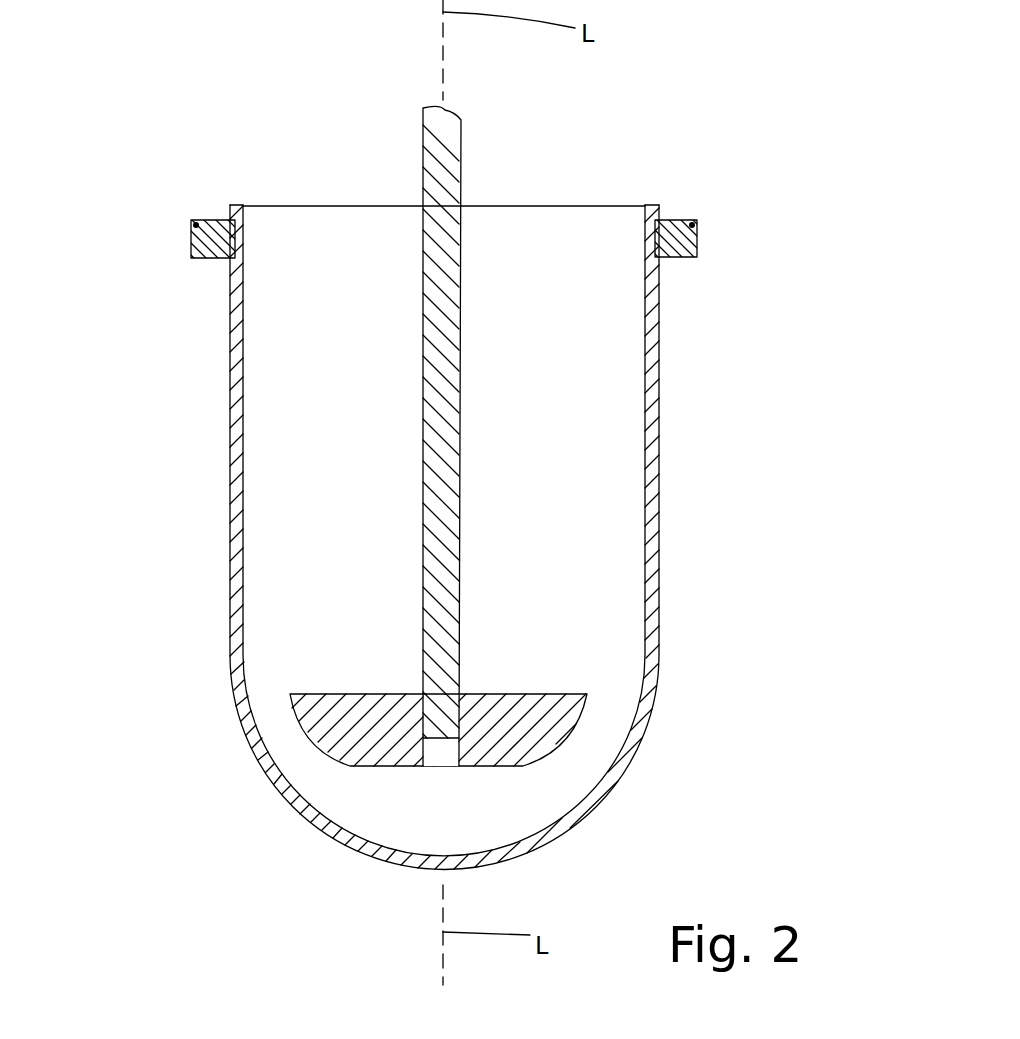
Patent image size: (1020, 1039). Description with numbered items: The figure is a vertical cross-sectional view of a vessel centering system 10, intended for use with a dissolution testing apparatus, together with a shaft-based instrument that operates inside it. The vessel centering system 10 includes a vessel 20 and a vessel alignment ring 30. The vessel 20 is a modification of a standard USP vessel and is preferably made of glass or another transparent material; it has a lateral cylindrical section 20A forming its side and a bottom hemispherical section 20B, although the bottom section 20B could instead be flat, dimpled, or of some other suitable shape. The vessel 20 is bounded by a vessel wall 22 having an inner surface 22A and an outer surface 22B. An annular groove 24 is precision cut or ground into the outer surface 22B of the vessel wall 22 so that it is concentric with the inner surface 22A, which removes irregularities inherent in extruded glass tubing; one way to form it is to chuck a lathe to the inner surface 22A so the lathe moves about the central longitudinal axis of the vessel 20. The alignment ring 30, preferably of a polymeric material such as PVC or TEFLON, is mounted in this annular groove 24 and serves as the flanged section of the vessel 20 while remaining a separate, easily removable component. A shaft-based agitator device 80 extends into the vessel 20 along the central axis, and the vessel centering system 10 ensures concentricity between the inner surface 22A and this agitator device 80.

The vessel centering system 10 is at (724, 124).
The vessel 20 is at (714, 352).
The lateral cylindrical section 20A is at (150, 170).
The bottom hemispherical section 20B is at (131, 622).
The vessel wall 22 is at (230, 470).
The inner surface 22A is at (645, 513).
The outer surface 22B is at (660, 558).
The annular groove 24 is at (650, 238).
The vessel alignment ring 30 is at (724, 217).
The shaft-based agitator device 80 is at (460, 155).